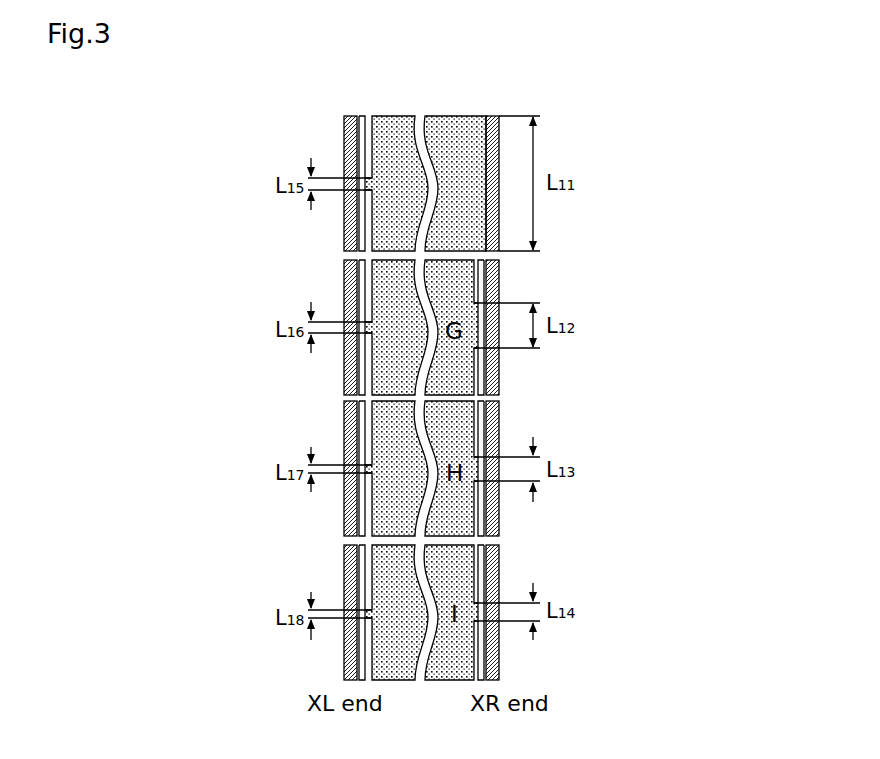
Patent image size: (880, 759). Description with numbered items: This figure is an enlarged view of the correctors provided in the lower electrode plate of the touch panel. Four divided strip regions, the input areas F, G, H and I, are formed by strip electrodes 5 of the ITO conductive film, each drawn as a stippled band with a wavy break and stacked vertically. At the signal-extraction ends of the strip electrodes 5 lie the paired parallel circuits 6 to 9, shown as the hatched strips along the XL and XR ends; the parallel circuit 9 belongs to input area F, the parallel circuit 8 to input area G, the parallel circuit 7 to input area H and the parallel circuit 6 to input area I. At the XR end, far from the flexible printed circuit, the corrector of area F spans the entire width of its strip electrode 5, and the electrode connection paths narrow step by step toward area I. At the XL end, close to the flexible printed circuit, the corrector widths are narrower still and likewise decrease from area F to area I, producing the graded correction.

The strip electrode 5 is at (454, 127).
The parallel circuit 6 is at (497, 562).
The parallel circuit 7 is at (497, 422).
The parallel circuit 8 is at (497, 280).
The parallel circuit 9 is at (499, 131).